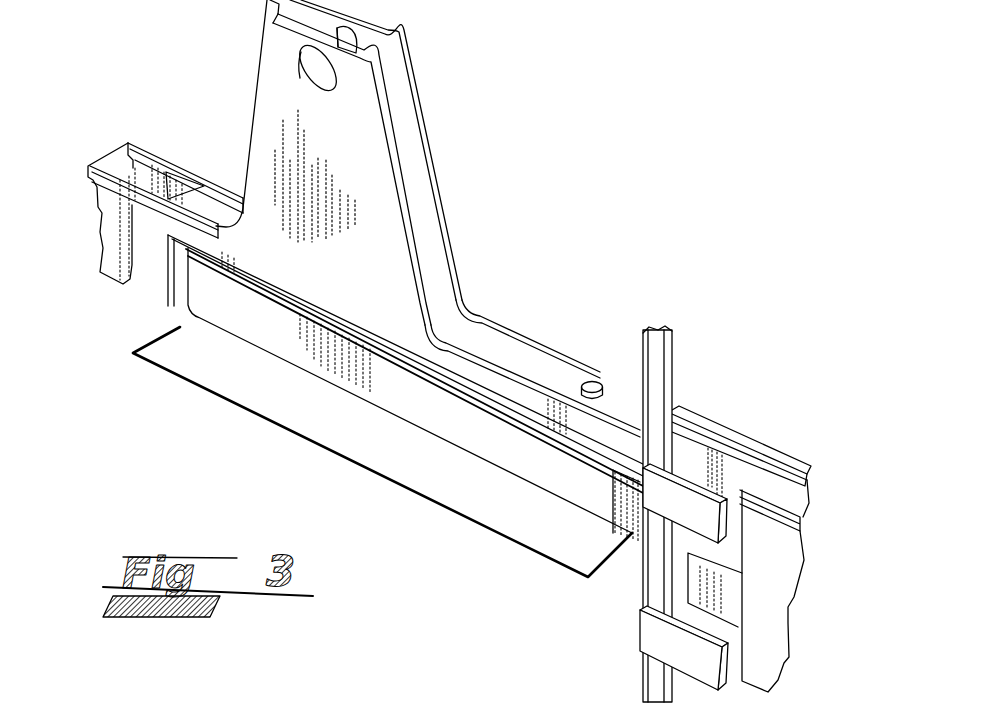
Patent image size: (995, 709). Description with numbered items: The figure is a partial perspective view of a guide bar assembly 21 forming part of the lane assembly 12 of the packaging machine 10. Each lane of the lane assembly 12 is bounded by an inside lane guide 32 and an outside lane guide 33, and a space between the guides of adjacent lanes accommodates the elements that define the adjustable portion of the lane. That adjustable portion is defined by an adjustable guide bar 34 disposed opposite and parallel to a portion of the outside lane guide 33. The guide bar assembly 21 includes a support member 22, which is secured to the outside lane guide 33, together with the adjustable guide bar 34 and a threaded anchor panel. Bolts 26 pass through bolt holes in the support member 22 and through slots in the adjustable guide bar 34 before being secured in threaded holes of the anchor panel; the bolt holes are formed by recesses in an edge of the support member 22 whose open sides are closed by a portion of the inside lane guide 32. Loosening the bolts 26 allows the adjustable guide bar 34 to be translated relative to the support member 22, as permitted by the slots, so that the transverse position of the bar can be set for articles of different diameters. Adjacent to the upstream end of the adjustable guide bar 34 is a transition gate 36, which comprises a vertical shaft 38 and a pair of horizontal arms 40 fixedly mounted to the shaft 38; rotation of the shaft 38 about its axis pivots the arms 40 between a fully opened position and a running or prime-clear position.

The packaging machine 10 is at (750, 273).
The lane assembly 12 is at (511, 213).
The guide bar assembly 21 is at (360, 461).
The support member 22 is at (517, 347).
The bolts 26 is at (594, 382).
The inside lane guide 32 is at (130, 280).
The outside lane guide 33 is at (170, 160).
The adjustable guide bar 34 is at (248, 337).
The transition gate 36 is at (614, 586).
The vertical shaft 38 is at (675, 347).
The horizontal arms 40 is at (688, 502).